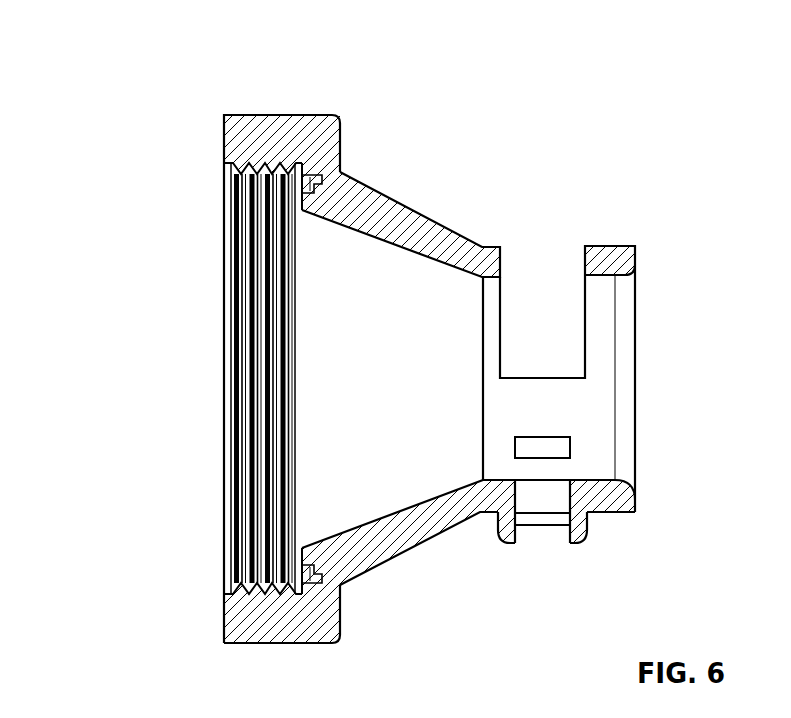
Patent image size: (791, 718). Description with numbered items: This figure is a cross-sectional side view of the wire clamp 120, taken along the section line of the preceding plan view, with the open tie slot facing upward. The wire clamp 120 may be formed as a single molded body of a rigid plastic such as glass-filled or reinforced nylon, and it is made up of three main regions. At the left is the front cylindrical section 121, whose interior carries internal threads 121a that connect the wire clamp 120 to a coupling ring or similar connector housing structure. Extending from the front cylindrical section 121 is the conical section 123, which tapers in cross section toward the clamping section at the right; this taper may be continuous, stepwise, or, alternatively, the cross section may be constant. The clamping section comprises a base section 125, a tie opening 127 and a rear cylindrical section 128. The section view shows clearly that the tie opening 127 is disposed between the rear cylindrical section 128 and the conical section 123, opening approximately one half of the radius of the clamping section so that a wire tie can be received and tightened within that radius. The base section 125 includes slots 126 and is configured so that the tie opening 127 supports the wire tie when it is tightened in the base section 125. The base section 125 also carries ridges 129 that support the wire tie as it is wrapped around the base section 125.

The wire clamp 120 is at (141, 70).
The front cylindrical section 121 is at (277, 114).
The internal threads 121a is at (252, 444).
The conical section 123 is at (398, 578).
The base section 125 is at (540, 548).
The slots 126 is at (566, 447).
The tie opening 127 is at (553, 272).
The rear cylindrical section 128 is at (615, 235).
The ridges 129 is at (600, 537).